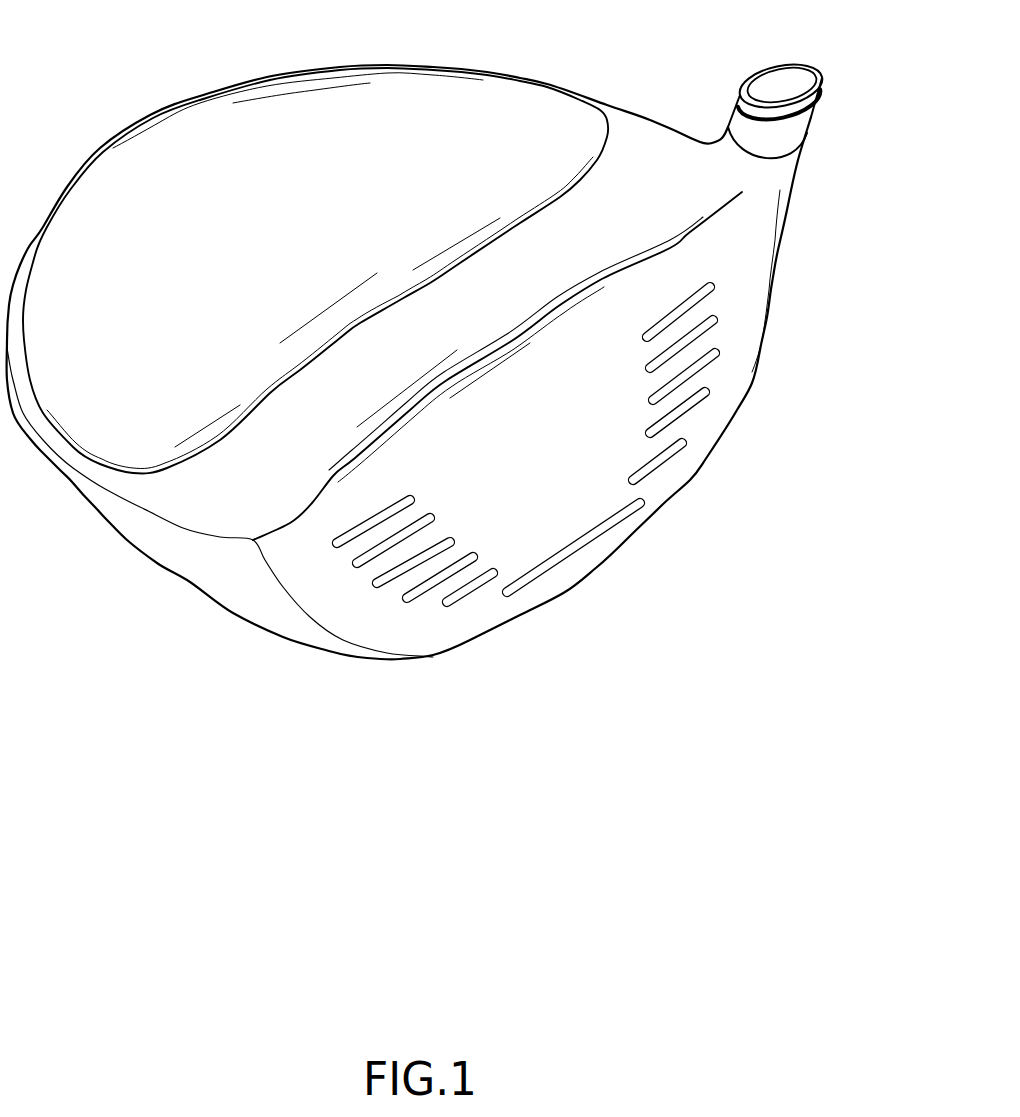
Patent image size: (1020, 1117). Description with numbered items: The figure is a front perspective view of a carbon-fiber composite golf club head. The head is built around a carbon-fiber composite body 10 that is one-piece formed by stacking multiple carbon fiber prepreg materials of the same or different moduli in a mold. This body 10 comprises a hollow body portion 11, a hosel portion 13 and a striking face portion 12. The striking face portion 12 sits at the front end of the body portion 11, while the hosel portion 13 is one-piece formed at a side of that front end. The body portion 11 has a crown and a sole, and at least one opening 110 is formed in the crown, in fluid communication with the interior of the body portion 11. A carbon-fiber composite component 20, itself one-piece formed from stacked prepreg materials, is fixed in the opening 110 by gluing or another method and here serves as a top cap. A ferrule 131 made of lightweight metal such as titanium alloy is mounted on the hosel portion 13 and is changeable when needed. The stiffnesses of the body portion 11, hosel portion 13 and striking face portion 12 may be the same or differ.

The carbon-fiber composite body 10 is at (636, 91).
The hollow body portion 11 is at (182, 512).
The opening 110 is at (533, 217).
The striking face portion 12 is at (561, 509).
The hosel portion 13 is at (778, 184).
The ferrule 131 is at (821, 102).
The carbon-fiber composite component 20 is at (150, 175).